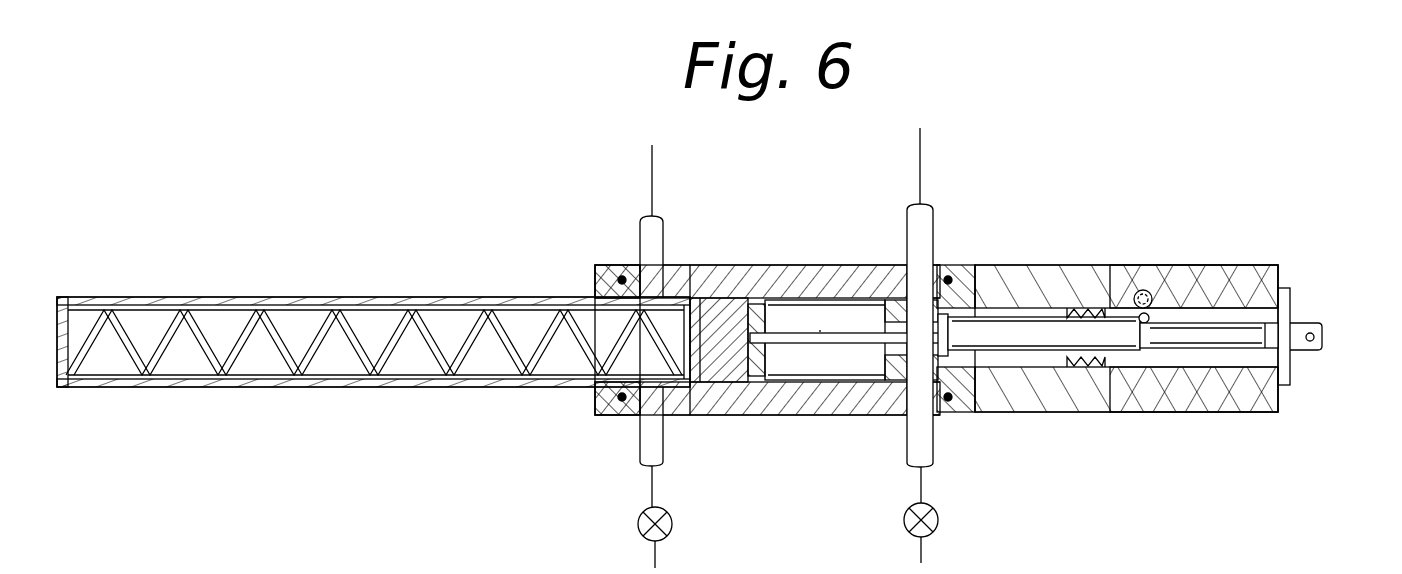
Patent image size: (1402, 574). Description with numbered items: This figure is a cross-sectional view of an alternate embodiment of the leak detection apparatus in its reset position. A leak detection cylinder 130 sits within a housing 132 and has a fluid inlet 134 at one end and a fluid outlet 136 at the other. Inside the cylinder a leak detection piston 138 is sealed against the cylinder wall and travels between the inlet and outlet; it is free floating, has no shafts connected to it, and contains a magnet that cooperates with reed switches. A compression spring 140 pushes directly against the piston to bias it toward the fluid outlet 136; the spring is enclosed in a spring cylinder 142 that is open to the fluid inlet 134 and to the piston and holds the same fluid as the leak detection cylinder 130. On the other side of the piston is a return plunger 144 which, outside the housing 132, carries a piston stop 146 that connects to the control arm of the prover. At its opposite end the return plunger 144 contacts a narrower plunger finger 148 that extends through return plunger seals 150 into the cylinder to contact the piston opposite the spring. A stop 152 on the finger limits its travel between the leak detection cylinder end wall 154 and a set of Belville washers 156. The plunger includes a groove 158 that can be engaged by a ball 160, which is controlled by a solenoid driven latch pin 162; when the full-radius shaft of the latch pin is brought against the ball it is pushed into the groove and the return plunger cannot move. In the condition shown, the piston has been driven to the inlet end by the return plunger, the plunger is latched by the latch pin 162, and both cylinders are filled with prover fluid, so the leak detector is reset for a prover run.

The leak detection cylinder 130 is at (855, 372).
The housing 132 is at (838, 300).
The fluid inlet 134 is at (640, 232).
The fluid outlet 136 is at (940, 236).
The leak detection piston 138 is at (758, 300).
The compression spring 140 is at (560, 390).
The spring cylinder 142 is at (475, 296).
The return plunger 144 is at (1278, 265).
The piston stop 146 is at (1362, 250).
The plunger finger 148 is at (823, 330).
The return plunger seals 150 is at (878, 380).
The stop 152 is at (1000, 317).
The leak detection cylinder end wall 154 is at (1012, 455).
The Belville washers 156 is at (1100, 367).
The groove 158 is at (1205, 323).
The ball 160 is at (1140, 290).
The solenoid driven latch pin 162 is at (1177, 300).